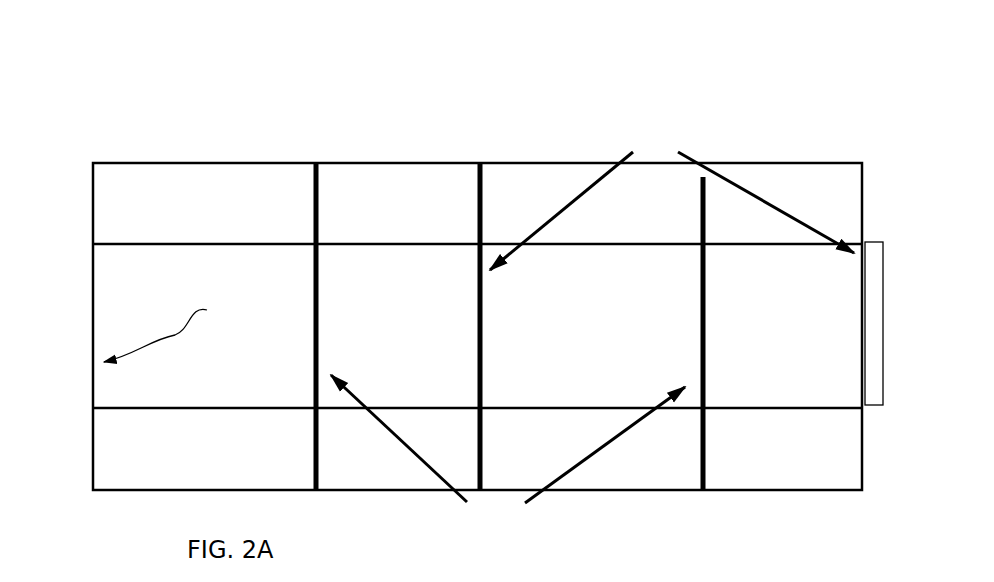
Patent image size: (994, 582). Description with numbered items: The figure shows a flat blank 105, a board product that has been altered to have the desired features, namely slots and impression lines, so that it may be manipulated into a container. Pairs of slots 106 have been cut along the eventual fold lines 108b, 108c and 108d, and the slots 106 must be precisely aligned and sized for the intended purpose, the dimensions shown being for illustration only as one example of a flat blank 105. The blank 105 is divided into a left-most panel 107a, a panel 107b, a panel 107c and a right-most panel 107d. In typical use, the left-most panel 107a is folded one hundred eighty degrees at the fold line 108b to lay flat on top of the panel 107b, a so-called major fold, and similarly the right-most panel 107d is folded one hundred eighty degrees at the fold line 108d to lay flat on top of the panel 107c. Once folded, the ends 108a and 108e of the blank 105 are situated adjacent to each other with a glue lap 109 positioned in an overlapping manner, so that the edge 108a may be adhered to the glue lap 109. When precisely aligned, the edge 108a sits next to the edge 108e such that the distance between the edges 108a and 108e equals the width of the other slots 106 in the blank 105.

The blank 105 is at (168, 78).
The slots 106 is at (312, 153).
The left-most panel 107a is at (133, 326).
The panel 107b is at (423, 306).
The panel 107c is at (661, 316).
The right-most panel 107d is at (832, 275).
The edge 108a is at (173, 320).
The fold line 108b is at (408, 454).
The fold line 108c is at (566, 196).
The fold line 108d is at (600, 460).
The edge 108e is at (763, 185).
The glue lap 109 is at (879, 320).